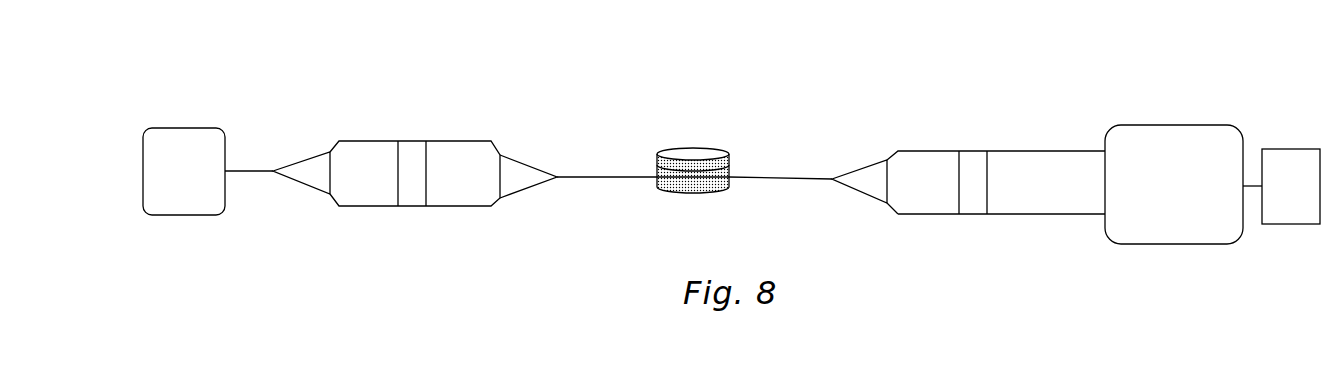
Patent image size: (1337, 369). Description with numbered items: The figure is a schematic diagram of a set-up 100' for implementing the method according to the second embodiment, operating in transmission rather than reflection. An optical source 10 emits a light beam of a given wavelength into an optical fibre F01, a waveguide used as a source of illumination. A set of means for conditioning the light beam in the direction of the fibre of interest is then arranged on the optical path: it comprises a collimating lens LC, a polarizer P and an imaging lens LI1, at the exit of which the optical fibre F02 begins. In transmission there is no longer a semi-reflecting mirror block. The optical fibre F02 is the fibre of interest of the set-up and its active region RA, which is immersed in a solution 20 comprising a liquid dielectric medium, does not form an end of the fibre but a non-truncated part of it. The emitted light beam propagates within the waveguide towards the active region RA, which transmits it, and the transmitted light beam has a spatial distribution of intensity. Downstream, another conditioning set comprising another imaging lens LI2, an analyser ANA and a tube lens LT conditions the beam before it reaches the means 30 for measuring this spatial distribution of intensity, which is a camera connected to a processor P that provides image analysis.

The set-up 100' is at (564, 39).
The optical source 10 is at (180, 220).
The optical fibre F01 is at (251, 165).
The collimating lens LC is at (367, 211).
The polarizer P is at (414, 141).
The imaging lens LI1 is at (450, 212).
The optical fibre F02 is at (608, 182).
The active region RA is at (690, 160).
The solution 20 is at (710, 197).
The imaging lens LI2 is at (927, 146).
The analyser ANA is at (972, 222).
The tube lens LT is at (1050, 222).
The means for measuring 30 is at (1177, 256).